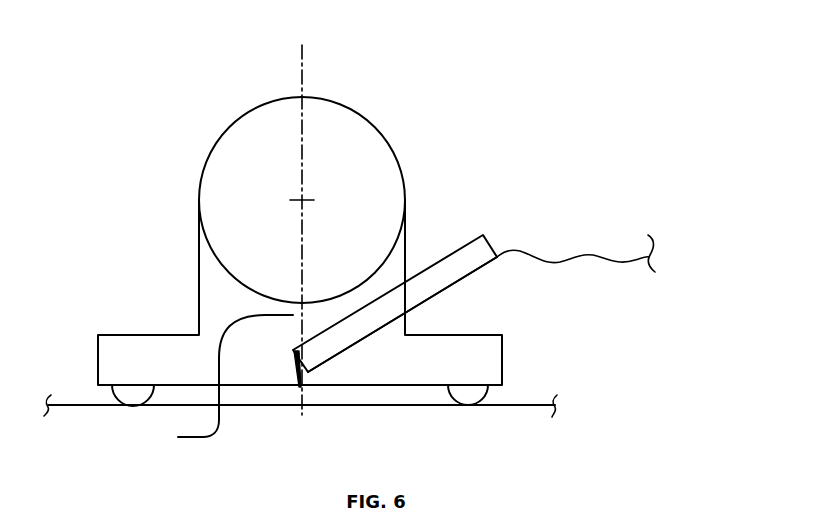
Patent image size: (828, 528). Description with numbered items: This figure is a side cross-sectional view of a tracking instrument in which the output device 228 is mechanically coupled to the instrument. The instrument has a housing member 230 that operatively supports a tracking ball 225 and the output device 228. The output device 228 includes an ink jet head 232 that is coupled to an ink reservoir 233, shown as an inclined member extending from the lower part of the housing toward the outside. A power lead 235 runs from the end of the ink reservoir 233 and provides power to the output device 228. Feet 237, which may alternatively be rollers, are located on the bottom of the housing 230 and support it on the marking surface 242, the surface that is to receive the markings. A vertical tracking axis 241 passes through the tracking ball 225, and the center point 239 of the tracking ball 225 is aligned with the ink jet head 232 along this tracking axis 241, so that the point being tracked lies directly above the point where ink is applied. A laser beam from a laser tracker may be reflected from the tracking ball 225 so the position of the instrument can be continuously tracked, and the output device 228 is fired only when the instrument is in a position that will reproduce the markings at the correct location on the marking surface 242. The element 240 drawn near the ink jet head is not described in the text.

The tracking ball 225 is at (386, 116).
The output device 228 is at (472, 302).
The housing member 230 is at (198, 287).
The ink jet head 232 is at (300, 388).
The ink reservoir 233 is at (439, 246).
The power lead 235 is at (589, 253).
The feet 237 is at (132, 406).
The center point 239 is at (291, 185).
The channel 240 is at (216, 381).
The tracking axis 241 is at (302, 53).
The marking surface 242 is at (370, 406).